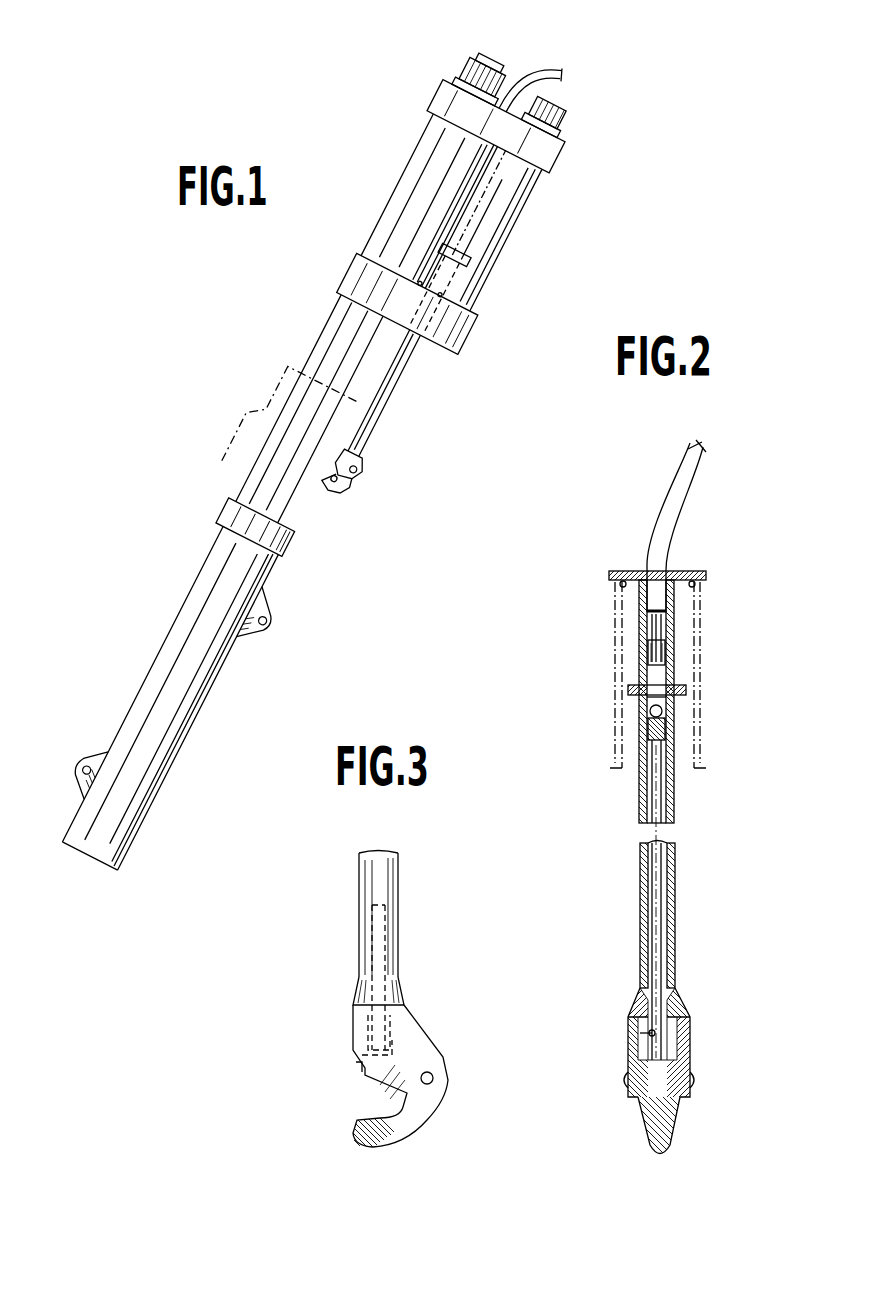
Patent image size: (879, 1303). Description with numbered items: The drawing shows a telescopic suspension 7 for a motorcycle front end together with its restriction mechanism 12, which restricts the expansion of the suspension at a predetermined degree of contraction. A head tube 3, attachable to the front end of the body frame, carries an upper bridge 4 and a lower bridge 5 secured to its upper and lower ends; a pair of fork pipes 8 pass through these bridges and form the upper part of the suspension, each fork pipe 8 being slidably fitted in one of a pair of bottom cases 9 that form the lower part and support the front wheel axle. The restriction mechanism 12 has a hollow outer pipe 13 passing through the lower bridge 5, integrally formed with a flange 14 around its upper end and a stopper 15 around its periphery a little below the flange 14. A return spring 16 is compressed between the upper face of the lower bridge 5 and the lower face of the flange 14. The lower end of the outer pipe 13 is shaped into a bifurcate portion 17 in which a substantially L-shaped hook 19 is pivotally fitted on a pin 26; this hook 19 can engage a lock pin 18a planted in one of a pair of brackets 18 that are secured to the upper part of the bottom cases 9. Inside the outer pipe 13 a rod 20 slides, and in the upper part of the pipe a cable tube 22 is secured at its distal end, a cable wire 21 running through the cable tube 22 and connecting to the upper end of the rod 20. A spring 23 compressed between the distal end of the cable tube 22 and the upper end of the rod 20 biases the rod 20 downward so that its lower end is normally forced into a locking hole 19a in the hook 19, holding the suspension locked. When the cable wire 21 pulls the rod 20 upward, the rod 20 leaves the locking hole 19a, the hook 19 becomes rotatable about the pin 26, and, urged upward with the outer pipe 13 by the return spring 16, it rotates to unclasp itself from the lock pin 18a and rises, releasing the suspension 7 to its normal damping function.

In FIG. 1, the head tube 3 is at (530, 174).
In FIG. 1, the upper bridge 4 is at (432, 106).
In FIG. 1, the lower bridge 5 is at (370, 262).
In FIG. 1, the telescopic suspension 7 is at (243, 462).
In FIG. 1, the fork pipes 8 is at (418, 177).
In FIG. 1, the bottom cases 9 is at (165, 662).
In FIG. 1, the restriction mechanism 12 is at (396, 381).
In FIG. 2, the outer pipe 13 is at (672, 880).
In FIG. 1, the flange 14 is at (462, 252).
In FIG. 2, the flange 14 is at (690, 572).
In FIG. 2, the stopper 15 is at (682, 690).
In FIG. 1, the return spring 16 is at (456, 272).
In FIG. 2, the return spring 16 is at (613, 606).
In FIG. 1, the bifurcate portion 17 is at (368, 452).
In FIG. 2, the bifurcate portion 17 is at (690, 1019).
In FIG. 1, the brackets 18 is at (262, 612).
In FIG. 1, the lock pin 18a is at (272, 627).
In FIG. 1, the hook 19 is at (356, 482).
In FIG. 2, the hook 19 is at (668, 1130).
In FIG. 3, the hook 19 is at (432, 1124).
In FIG. 2, the locking hole 19a is at (650, 1033).
In FIG. 3, the locking hole 19a is at (388, 1034).
In FIG. 2, the rod 20 is at (650, 880).
In FIG. 3, the rod 20 is at (386, 922).
In FIG. 2, the cable wire 21 is at (655, 672).
In FIG. 1, the cable tube 22 is at (478, 206).
In FIG. 2, the cable tube 22 is at (672, 487).
In FIG. 2, the spring 23 is at (668, 668).
In FIG. 3, the pin 26 is at (434, 1078).